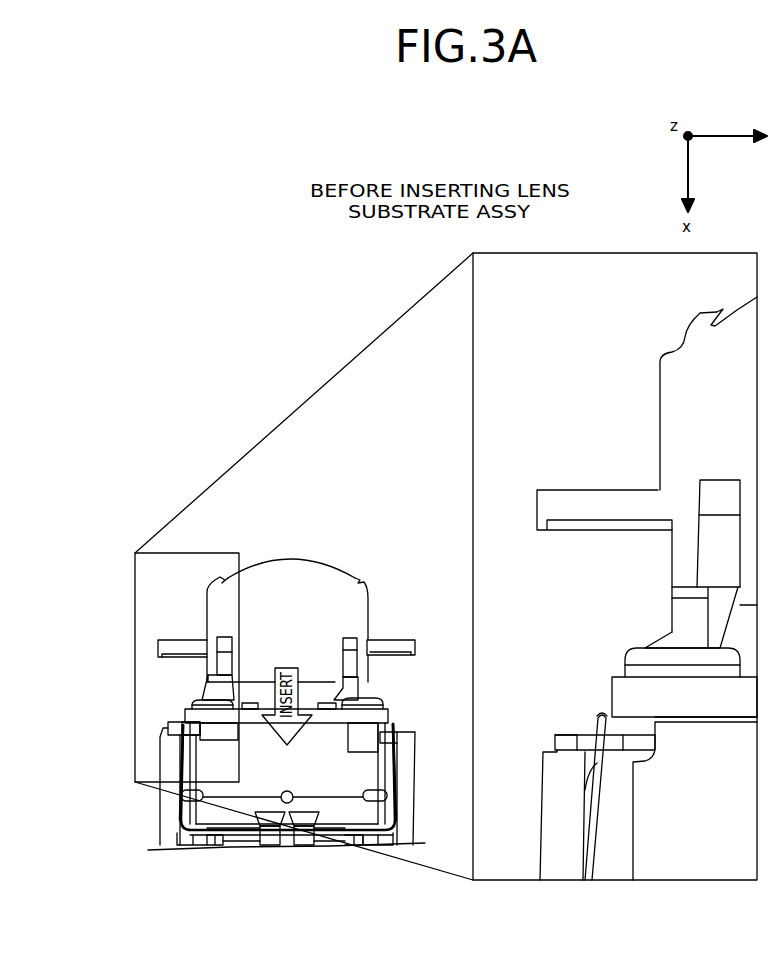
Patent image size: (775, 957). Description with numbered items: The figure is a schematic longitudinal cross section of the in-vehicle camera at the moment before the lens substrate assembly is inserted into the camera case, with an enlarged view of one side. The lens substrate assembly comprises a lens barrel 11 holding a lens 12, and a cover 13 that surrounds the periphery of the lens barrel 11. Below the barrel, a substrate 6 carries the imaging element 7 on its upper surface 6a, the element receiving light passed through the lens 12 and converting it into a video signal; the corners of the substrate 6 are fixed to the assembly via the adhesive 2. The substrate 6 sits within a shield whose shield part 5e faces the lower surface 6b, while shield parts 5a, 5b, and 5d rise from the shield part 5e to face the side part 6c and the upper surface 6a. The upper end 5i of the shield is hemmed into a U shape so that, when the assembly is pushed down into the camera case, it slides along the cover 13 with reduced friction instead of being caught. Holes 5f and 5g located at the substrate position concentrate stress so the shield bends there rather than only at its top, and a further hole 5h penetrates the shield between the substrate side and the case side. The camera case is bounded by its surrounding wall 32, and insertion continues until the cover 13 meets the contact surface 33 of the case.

The adhesive 2 is at (200, 700).
The shield part 5a is at (178, 748).
The shield part 5b is at (398, 773).
The shield part 5d is at (183, 722).
The shield part 5e is at (208, 848).
The hole 5f is at (287, 790).
The hole 5g is at (198, 800).
The hole 5h is at (188, 846).
The upper end 5i is at (598, 716).
The substrate 6 is at (337, 725).
The upper surface 6a is at (321, 708).
The lower surface 6b is at (315, 724).
The side part 6c is at (185, 711).
The imaging element 7 is at (264, 705).
The lens barrel 11 is at (204, 604).
The lens 12 is at (295, 561).
The cover 13 is at (175, 641).
The surrounding wall 32 is at (167, 762).
The contact surface 33 is at (168, 724).